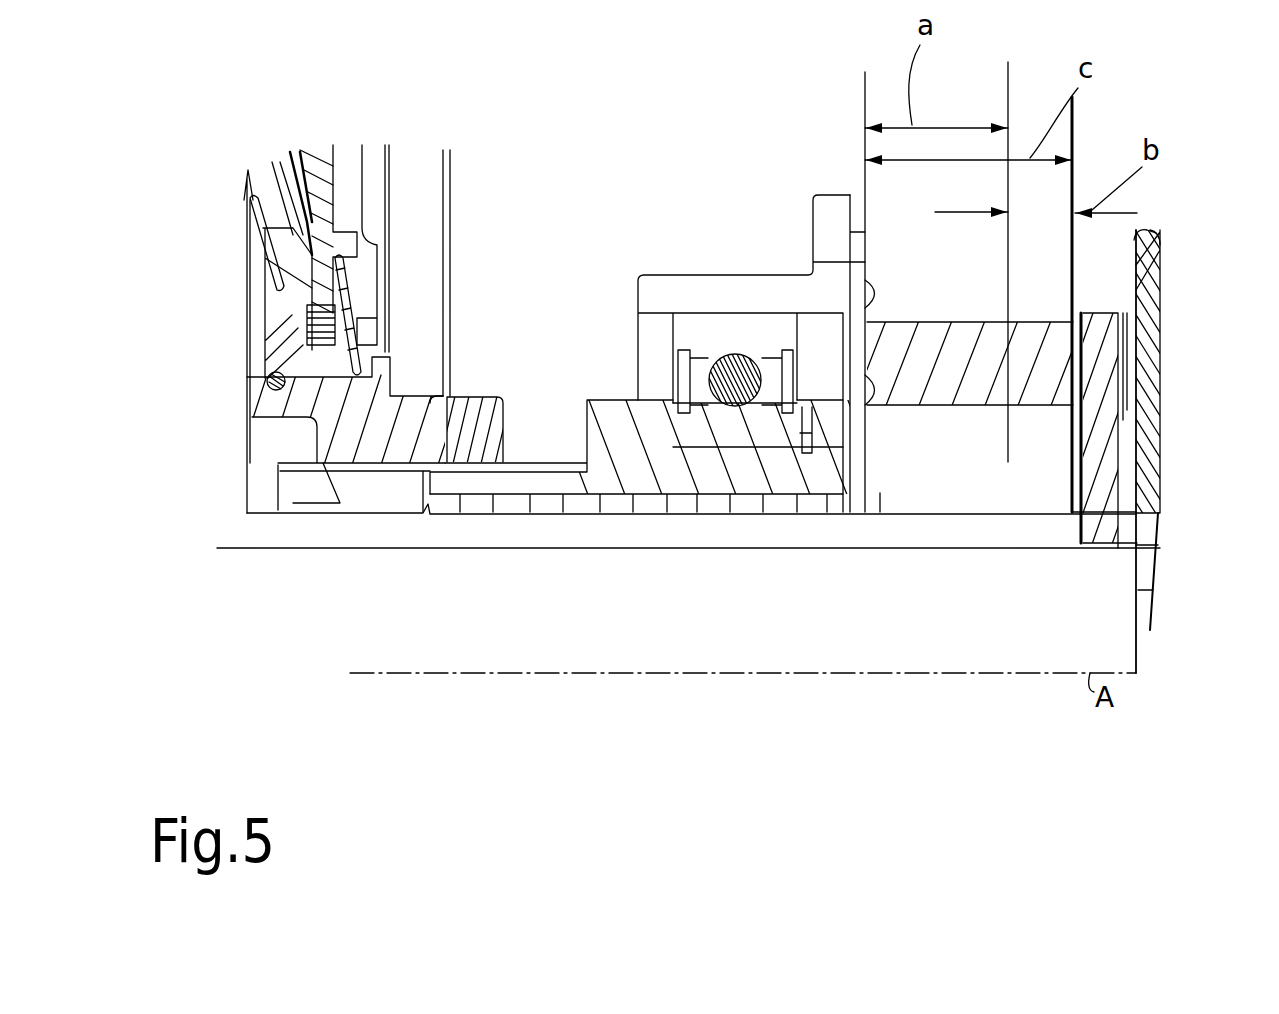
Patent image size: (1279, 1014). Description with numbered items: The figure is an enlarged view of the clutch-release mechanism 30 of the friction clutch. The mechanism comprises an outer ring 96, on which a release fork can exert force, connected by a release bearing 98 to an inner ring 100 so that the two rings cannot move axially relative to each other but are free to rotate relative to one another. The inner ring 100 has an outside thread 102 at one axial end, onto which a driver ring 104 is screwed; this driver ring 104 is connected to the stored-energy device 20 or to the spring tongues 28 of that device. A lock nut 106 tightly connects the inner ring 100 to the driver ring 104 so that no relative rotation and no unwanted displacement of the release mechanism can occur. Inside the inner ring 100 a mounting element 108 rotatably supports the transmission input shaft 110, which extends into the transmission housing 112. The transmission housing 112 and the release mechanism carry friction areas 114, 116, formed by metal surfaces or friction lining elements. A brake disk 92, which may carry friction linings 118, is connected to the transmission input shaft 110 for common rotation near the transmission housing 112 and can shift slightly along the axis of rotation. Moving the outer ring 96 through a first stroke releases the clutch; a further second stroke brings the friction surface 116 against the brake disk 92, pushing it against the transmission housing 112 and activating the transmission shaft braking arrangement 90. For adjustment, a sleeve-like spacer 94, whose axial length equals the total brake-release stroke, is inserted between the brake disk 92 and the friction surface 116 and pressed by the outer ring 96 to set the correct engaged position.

The stored-energy device 20 is at (268, 197).
The spring tongues 28 is at (278, 313).
The clutch-release mechanism 30 is at (689, 216).
The transmission shaft braking arrangement 90 is at (1035, 335).
The brake disk 92 is at (1103, 453).
The spacer 94 is at (963, 408).
The outer ring 96 is at (715, 273).
The release bearing 98 is at (735, 430).
The inner ring 100 is at (380, 490).
The outside thread 102 is at (520, 463).
The driver ring 104 is at (335, 430).
The lock nut 106 is at (467, 457).
The mounting element 108 is at (550, 500).
The transmission input shaft 110 is at (800, 535).
The transmission housing 112 is at (1156, 347).
The friction area 114 is at (1160, 310).
The friction area 116 is at (853, 513).
The friction linings 118 is at (1052, 403).